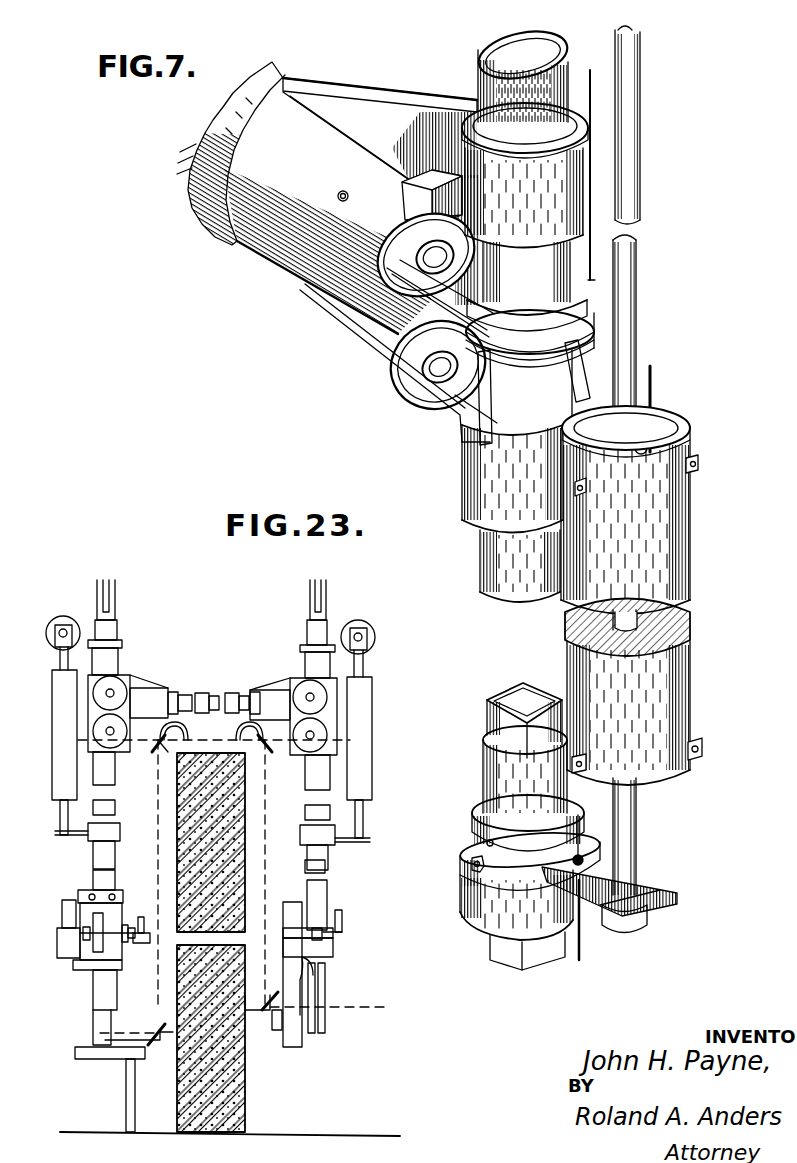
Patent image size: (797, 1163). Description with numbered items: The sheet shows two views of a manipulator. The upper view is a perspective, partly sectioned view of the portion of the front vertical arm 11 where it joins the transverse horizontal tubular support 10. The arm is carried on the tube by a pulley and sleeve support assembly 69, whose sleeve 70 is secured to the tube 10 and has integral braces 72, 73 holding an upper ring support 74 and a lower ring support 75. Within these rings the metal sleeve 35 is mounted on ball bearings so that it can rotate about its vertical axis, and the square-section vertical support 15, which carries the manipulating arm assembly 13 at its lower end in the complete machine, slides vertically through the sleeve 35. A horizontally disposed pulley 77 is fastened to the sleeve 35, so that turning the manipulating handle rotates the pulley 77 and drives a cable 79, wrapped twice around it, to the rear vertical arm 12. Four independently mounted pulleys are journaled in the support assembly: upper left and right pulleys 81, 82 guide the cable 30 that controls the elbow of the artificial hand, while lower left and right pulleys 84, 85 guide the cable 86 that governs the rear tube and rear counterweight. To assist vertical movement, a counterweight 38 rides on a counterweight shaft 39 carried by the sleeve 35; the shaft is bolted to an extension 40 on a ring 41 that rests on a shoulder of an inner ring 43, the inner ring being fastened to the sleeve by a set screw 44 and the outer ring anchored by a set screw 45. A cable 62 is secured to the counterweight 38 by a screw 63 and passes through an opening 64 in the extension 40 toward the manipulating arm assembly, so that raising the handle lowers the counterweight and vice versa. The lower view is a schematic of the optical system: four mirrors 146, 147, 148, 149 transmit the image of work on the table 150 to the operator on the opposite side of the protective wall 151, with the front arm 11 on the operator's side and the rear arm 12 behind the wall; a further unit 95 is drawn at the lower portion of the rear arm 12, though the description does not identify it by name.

In FIG. 7, the transverse horizontal tubular support 10 is at (290, 86).
In FIG. 7, the sleeve 70 is at (322, 162).
In FIG. 7, the brace 72 is at (410, 136).
In FIG. 7, the upper left pulley 81 is at (413, 232).
In FIG. 7, the lower left pulley 84 is at (405, 358).
In FIG. 7, the cable 79 is at (390, 318).
In FIG. 7, the brace 73 is at (445, 418).
In FIG. 7, the cable 30 is at (588, 72).
In FIG. 7, the upper ring support 74 is at (530, 216).
In FIG. 7, the metal sleeve 35 is at (524, 280).
In FIG. 7, the lower right pulley 85 is at (600, 330).
In FIG. 7, the upper right pulley 82 is at (587, 261).
In FIG. 7, the horizontally disposed pulley 77 is at (560, 312).
In FIG. 7, the cable 86 is at (600, 345).
In FIG. 7, the lower ring support 75 is at (520, 490).
In FIG. 7, the counterweight shaft 39 is at (640, 270).
In FIG. 7, the cable 62 is at (655, 394).
In FIG. 7, the screw 63 is at (645, 446).
In FIG. 7, the counterweight 38 is at (625, 564).
In FIG. 7, the vertical support 15 is at (490, 705).
In FIG. 7, the front vertical arm 11 is at (480, 728).
In FIG. 23, the front vertical arm 11 is at (306, 790).
In FIG. 7, the inner ring 43 is at (480, 832).
In FIG. 7, the ring 41 is at (468, 854).
In FIG. 7, the set screw 44 is at (509, 849).
In FIG. 7, the set screw 45 is at (468, 868).
In FIG. 7, the opening 64 is at (590, 858).
In FIG. 7, the extension 40 is at (660, 887).
In FIG. 23, the protective wall 151 is at (245, 1080).
In FIG. 23, the rear vertical arm 12 is at (116, 852).
In FIG. 23, the mirror 148 is at (160, 748).
In FIG. 23, the gear unit 95 is at (74, 962).
In FIG. 23, the table 150 is at (120, 1055).
In FIG. 23, the mirror 149 is at (152, 1046).
In FIG. 23, the pulley and sleeve support assembly 69 is at (290, 748).
In FIG. 23, the mirror 147 is at (266, 737).
In FIG. 23, the manipulating arm assembly 13 is at (328, 998).
In FIG. 23, the mirror 146 is at (270, 1022).